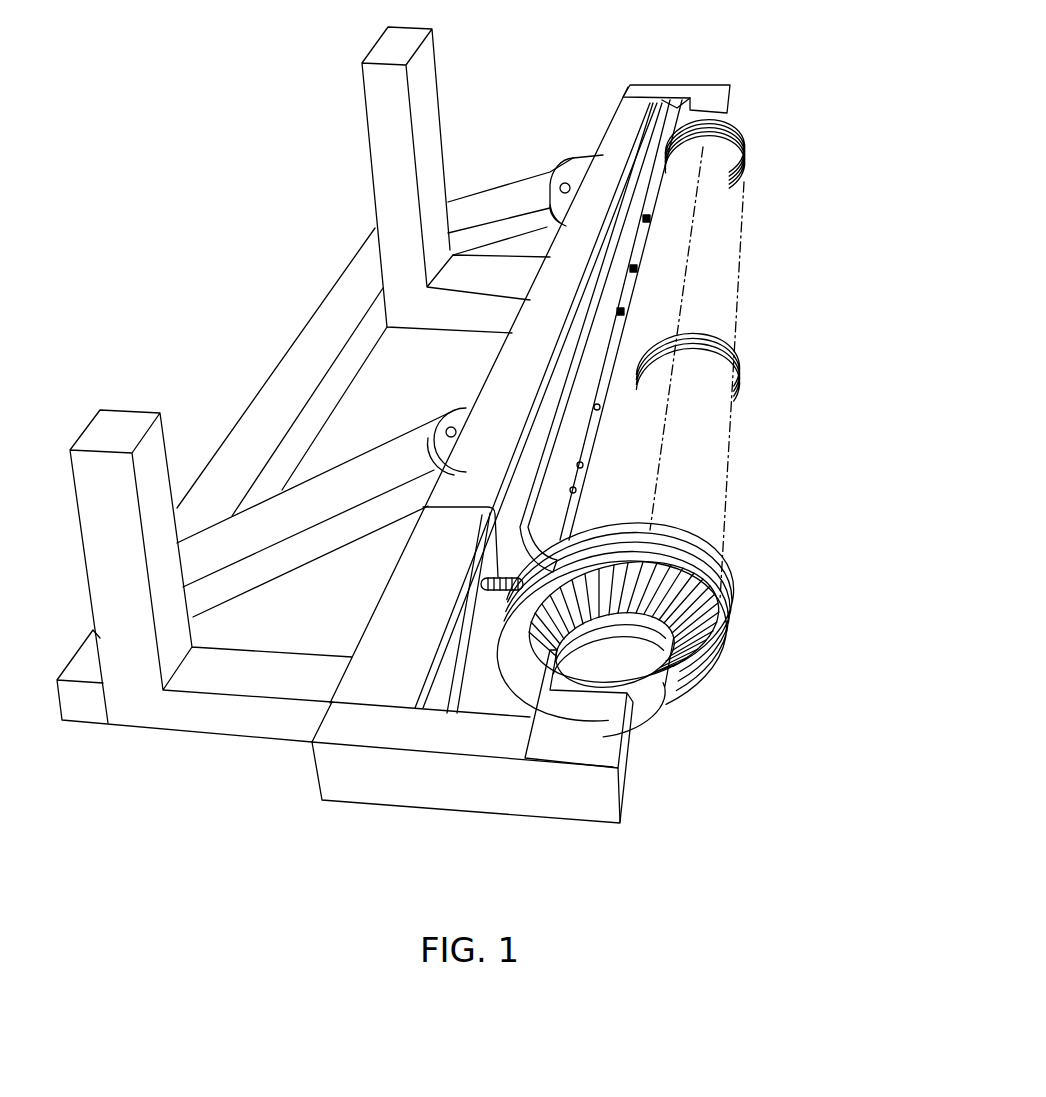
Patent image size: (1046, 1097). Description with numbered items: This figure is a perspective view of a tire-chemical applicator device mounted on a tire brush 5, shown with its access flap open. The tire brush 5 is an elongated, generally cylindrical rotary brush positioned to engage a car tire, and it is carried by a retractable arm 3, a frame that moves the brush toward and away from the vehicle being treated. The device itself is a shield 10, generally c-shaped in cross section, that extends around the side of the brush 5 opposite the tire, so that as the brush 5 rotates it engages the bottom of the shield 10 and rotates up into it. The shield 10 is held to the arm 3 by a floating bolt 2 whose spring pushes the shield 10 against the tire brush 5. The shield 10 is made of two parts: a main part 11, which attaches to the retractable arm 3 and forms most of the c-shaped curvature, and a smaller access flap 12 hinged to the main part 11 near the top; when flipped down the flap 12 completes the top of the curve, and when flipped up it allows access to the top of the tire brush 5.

The floating bolt 2 is at (481, 582).
The retractable arm 3 is at (303, 497).
The tire brush 5 is at (714, 481).
The shield 10 is at (633, 290).
The main part 11 is at (552, 655).
The access flap 12 is at (640, 190).